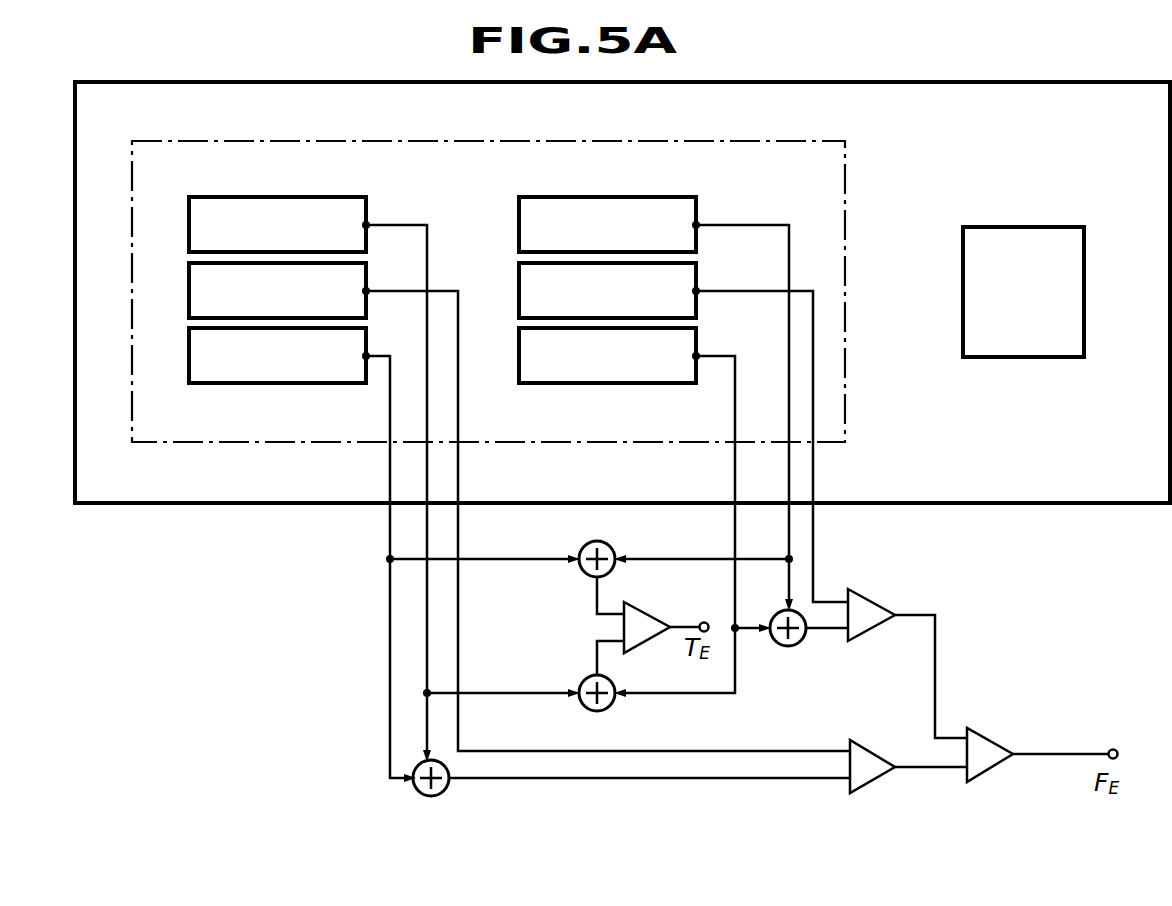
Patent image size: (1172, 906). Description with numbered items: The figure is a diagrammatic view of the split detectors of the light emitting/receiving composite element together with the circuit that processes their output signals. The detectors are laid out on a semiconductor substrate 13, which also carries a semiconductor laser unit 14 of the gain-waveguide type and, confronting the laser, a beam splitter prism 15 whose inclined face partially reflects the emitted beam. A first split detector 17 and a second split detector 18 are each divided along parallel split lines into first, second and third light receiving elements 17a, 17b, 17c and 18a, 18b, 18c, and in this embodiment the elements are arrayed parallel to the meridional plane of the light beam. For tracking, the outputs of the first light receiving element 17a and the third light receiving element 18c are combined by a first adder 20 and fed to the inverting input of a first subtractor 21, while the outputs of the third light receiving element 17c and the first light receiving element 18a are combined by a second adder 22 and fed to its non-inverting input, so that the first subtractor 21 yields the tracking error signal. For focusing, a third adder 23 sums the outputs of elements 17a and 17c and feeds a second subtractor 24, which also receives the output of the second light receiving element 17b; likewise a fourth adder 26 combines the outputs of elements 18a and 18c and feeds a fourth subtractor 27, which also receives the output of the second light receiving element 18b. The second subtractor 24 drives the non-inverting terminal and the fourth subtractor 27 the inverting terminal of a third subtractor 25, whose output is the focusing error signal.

The semiconductor substrate 13 is at (1040, 483).
The semiconductor laser unit 14 is at (997, 235).
The beam splitter prism 15 is at (848, 190).
The first split detector 17 is at (578, 287).
The first light receiving element 17a is at (523, 213).
The second light receiving element 17b is at (530, 290).
The third light receiving element 17c is at (556, 372).
The second split detector 18 is at (259, 288).
The first light receiving element 18a is at (212, 202).
The second light receiving element 18b is at (197, 290).
The third light receiving element 18c is at (262, 375).
The first adder 20 is at (585, 572).
The first subtractor 21 is at (646, 616).
The second adder 22 is at (587, 678).
The third adder 23 is at (796, 646).
The second subtractor 24 is at (868, 596).
The third subtractor 25 is at (989, 735).
The fourth adder 26 is at (448, 790).
The fourth subtractor 27 is at (880, 776).